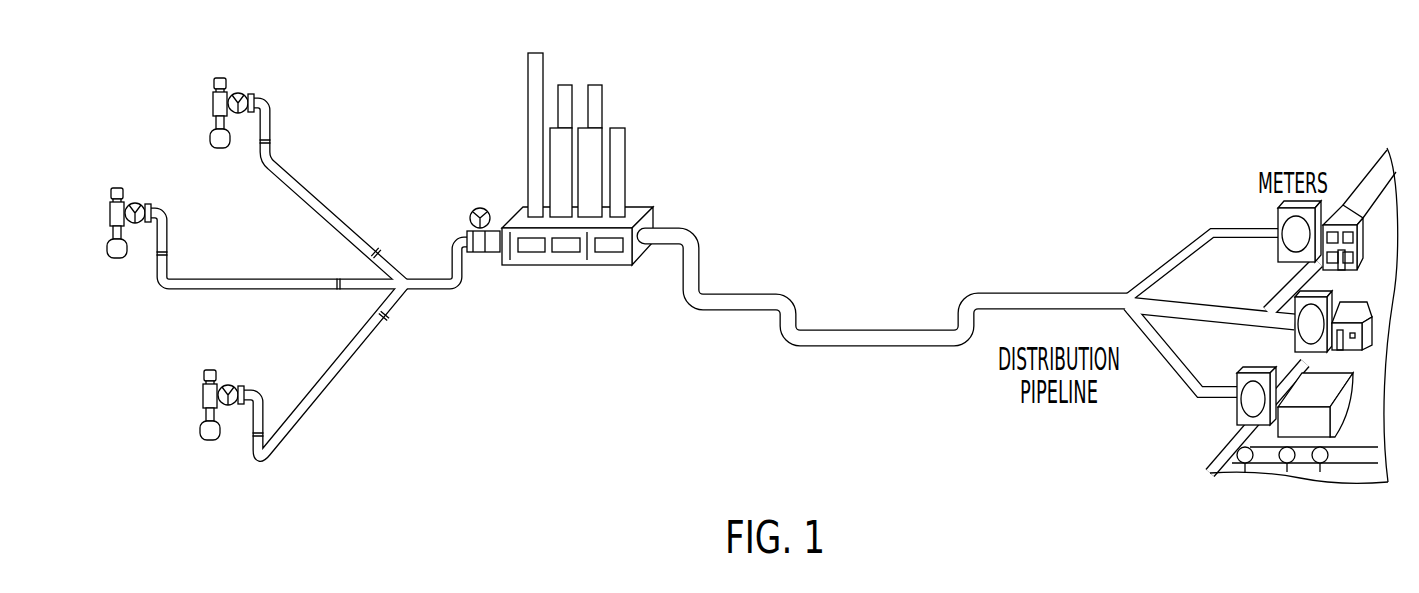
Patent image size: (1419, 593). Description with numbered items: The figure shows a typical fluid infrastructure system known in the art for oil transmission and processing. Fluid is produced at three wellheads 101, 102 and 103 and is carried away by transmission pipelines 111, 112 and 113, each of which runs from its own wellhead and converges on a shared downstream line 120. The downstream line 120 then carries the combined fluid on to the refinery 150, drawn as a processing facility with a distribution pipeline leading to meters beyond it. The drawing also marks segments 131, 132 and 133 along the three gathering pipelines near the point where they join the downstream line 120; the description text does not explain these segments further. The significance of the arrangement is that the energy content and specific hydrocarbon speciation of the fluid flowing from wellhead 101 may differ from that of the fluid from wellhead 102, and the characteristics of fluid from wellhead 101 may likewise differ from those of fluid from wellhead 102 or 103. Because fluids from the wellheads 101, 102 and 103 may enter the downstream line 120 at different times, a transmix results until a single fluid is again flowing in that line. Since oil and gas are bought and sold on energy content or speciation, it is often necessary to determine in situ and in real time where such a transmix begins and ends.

The wellhead 101 is at (208, 106).
The wellhead 102 is at (110, 214).
The wellhead 103 is at (203, 397).
The transmission pipeline 111 is at (282, 171).
The transmission pipeline 112 is at (207, 277).
The transmission pipeline 113 is at (300, 437).
The downstream line 120 is at (450, 289).
The first pipeline segment 131 is at (377, 246).
The second pipeline segment 132 is at (335, 278).
The third pipeline segment 133 is at (385, 326).
The refinery 150 is at (630, 100).